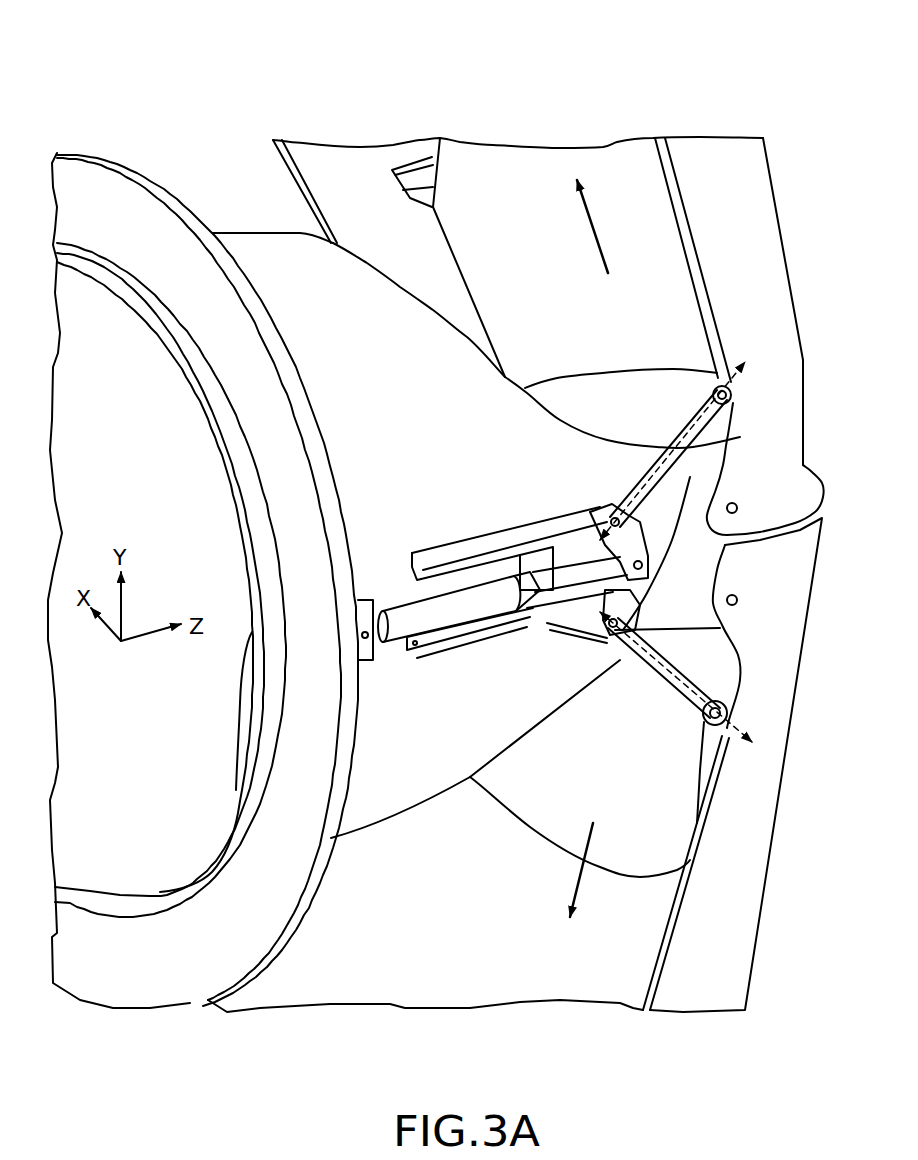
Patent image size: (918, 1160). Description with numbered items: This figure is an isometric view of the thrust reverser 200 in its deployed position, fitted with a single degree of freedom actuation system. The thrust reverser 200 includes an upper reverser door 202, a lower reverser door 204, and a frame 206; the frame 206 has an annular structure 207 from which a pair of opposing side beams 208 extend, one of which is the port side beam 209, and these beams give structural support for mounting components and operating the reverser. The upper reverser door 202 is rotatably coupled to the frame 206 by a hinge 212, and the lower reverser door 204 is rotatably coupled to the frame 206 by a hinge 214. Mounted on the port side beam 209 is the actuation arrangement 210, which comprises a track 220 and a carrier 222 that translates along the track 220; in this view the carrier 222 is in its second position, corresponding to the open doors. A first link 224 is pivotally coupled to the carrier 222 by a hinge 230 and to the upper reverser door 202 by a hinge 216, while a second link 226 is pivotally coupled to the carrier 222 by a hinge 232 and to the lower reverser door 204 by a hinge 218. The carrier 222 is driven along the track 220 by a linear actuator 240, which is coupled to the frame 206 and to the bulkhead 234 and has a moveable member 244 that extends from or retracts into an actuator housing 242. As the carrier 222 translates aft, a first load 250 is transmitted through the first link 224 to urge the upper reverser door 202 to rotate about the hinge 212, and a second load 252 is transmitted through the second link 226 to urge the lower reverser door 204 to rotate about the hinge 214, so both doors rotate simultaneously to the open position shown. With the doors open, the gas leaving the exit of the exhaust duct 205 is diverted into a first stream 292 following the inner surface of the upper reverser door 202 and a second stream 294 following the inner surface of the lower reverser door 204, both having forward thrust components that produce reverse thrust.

The thrust reverser 200 is at (692, 98).
The upper reverser door 202 is at (767, 220).
The lower reverser door 204 is at (742, 893).
The exhaust duct 205 is at (169, 451).
The frame 206 is at (348, 324).
The annular structure 207 is at (396, 569).
The pair of opposing side beams 208 is at (709, 594).
The port side beam 209 is at (701, 626).
The actuation arrangement 210 is at (450, 430).
The hinge 212 is at (740, 503).
The hinge 214 is at (736, 604).
The hinge 216 is at (738, 368).
The hinge 218 is at (720, 737).
The track 220 is at (507, 537).
The carrier 222 is at (583, 543).
The first link 224 is at (663, 455).
The second link 226 is at (668, 683).
The hinge 230 is at (610, 520).
The hinge 232 is at (617, 660).
The bulkhead 234 is at (290, 913).
The linear actuator 240 is at (455, 605).
The actuator housing 242 is at (477, 613).
The moveable member 244 is at (553, 590).
The first load 250 is at (727, 441).
The second load 252 is at (720, 688).
The first stream 292 is at (600, 243).
The second stream 294 is at (577, 870).